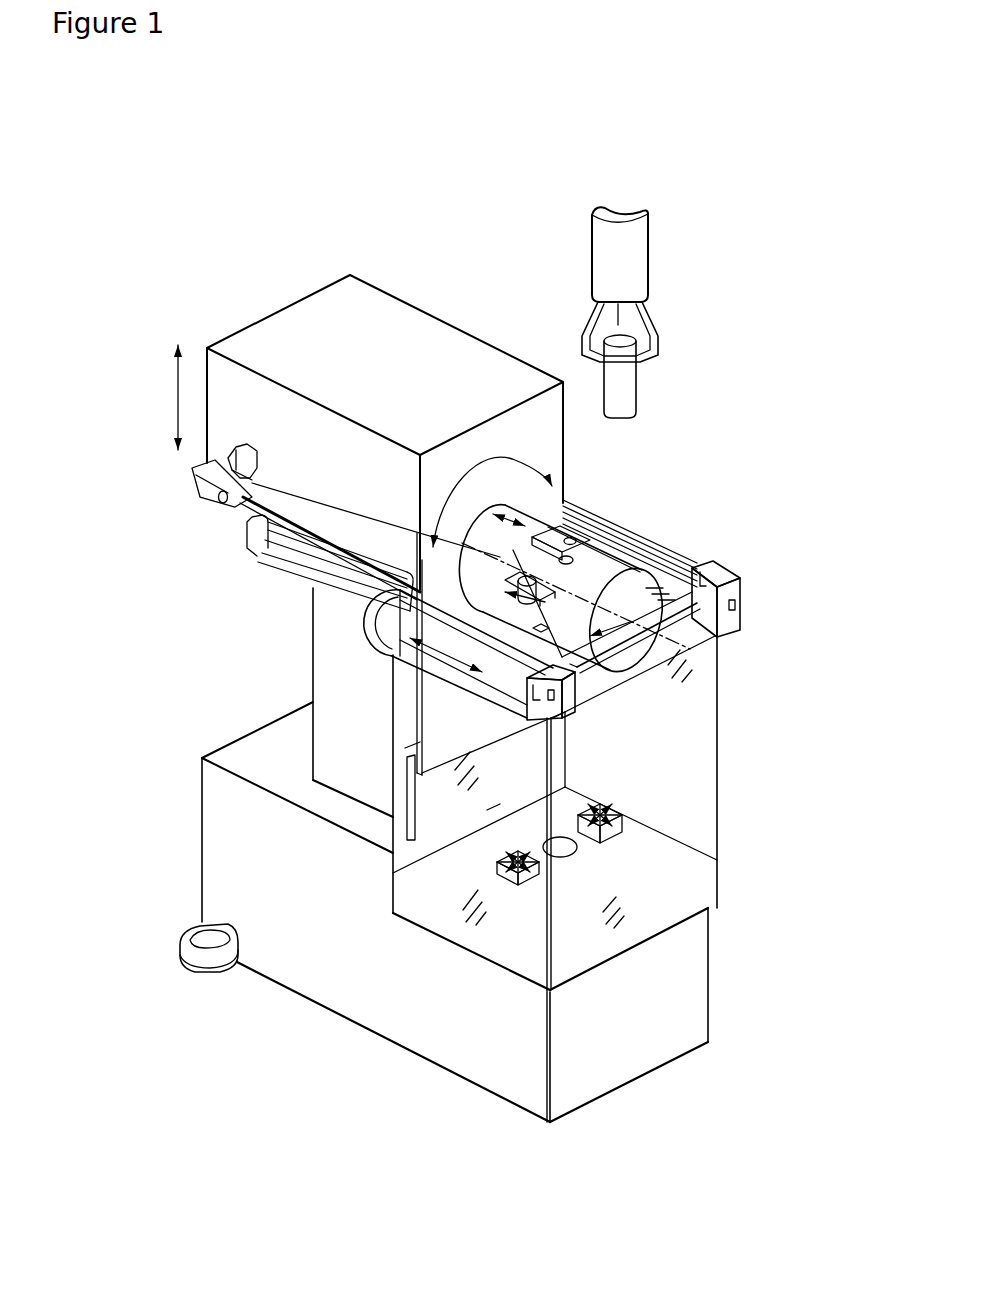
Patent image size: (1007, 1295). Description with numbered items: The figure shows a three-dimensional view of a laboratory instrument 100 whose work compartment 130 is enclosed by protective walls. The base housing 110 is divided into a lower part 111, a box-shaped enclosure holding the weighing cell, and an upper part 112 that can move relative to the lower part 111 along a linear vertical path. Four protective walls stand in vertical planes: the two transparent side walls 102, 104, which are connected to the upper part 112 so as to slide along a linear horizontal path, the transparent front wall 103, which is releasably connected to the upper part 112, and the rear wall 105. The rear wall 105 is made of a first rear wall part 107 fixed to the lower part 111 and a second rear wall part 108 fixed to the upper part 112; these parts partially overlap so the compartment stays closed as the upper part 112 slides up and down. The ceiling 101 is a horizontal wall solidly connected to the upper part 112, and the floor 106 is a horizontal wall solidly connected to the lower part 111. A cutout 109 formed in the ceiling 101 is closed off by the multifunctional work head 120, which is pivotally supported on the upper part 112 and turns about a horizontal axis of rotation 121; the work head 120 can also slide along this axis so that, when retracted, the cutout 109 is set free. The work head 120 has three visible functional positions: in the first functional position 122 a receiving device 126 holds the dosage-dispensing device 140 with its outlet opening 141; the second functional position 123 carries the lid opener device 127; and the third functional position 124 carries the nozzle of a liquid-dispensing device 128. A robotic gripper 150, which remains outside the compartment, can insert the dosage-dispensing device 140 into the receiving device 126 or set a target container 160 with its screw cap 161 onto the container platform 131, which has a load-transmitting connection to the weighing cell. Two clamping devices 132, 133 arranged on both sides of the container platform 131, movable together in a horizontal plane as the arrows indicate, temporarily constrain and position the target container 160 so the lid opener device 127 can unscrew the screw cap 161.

The laboratory instrument 100 is at (255, 262).
The ceiling 101 is at (518, 590).
The side wall 102 is at (720, 733).
The front wall 103 is at (655, 908).
The side wall 104 is at (482, 935).
The rear wall 105 is at (403, 748).
The floor 106 is at (741, 865).
The first rear wall part 107 is at (487, 810).
The second rear wall part 108 is at (413, 710).
The cutout 109 is at (703, 637).
The base housing 110 is at (207, 712).
The lower part 111 is at (352, 987).
The upper part 112 is at (420, 350).
The multifunctional work head 120 is at (627, 583).
The axis of rotation 121 is at (740, 597).
The first functional position 122 is at (194, 474).
The second functional position 123 is at (388, 594).
The third functional position 124 is at (432, 617).
The receiving device 126 is at (690, 473).
The lid opener device 127 is at (250, 517).
The liquid-dispensing device 128 is at (533, 630).
The work compartment 130 is at (390, 847).
The container platform 131 is at (577, 843).
The clamping device 132 is at (620, 822).
The clamping device 133 is at (528, 868).
The dosage-dispensing device 140 is at (643, 540).
The outlet opening 141 is at (706, 508).
The robotic gripper 150 is at (618, 250).
The target container 160 is at (627, 395).
The screw cap 161 is at (618, 352).